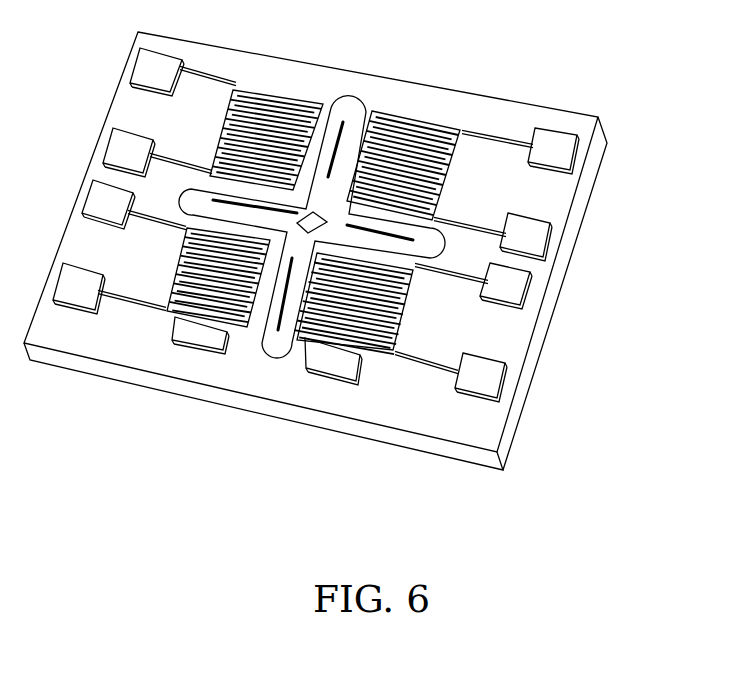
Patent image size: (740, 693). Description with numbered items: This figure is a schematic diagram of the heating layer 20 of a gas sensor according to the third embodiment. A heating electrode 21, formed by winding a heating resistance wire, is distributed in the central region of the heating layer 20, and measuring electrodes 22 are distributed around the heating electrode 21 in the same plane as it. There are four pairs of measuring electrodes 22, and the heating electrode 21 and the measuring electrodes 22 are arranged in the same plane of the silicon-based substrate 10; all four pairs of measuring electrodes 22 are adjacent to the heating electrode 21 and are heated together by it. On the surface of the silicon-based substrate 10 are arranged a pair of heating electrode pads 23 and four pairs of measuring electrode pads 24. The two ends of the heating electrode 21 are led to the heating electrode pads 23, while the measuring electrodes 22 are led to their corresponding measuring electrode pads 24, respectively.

The silicon-based substrate 10 is at (340, 251).
The heating layer 20 is at (364, 277).
The heating electrode 21 is at (288, 337).
The measuring electrodes 22 is at (428, 120).
The heating electrode pads 23 is at (338, 384).
The measuring electrode pads 24 is at (565, 128).